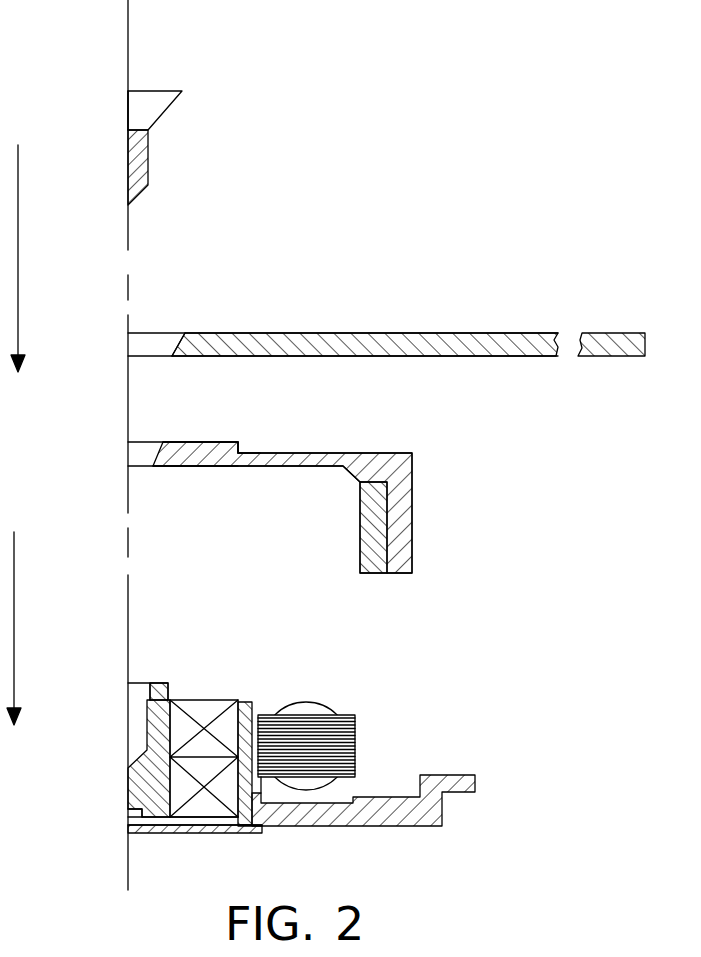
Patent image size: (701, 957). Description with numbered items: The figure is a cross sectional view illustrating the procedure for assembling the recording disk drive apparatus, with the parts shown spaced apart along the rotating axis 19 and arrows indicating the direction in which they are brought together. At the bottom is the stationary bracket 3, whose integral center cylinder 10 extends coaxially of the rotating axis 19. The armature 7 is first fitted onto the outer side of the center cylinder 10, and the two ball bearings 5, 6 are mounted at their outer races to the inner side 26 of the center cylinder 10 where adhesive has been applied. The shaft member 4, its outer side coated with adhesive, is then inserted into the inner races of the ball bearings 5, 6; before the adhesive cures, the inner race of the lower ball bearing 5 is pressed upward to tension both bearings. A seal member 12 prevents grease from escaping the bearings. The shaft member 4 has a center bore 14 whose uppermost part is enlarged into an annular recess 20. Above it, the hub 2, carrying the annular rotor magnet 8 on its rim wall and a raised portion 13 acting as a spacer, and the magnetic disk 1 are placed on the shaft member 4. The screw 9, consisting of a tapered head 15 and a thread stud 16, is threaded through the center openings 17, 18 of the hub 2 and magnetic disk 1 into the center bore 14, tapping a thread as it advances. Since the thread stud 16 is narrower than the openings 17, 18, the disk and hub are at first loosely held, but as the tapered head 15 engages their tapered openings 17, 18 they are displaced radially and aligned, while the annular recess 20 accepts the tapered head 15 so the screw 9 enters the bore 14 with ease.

The magnetic disk 1 is at (343, 334).
The hub 2 is at (412, 458).
The bracket 3 is at (376, 830).
The shaft member 4 is at (140, 805).
The ball bearing 5 is at (192, 810).
The ball bearing 6 is at (205, 700).
The armature 7 is at (362, 710).
The rotor magnet 8 is at (360, 537).
The screw 9 is at (128, 128).
The center cylinder 10 is at (244, 712).
The seal member 12 is at (222, 835).
The raised portion 13 is at (242, 452).
The center bore 14 is at (147, 724).
The tapered head 15 is at (155, 93).
The thread stud 16 is at (148, 162).
The center opening 17 is at (160, 450).
The center opening 18 is at (178, 333).
The rotating axis 19 is at (128, 46).
The annular recess 20 is at (158, 695).
The inner side 26 is at (238, 830).